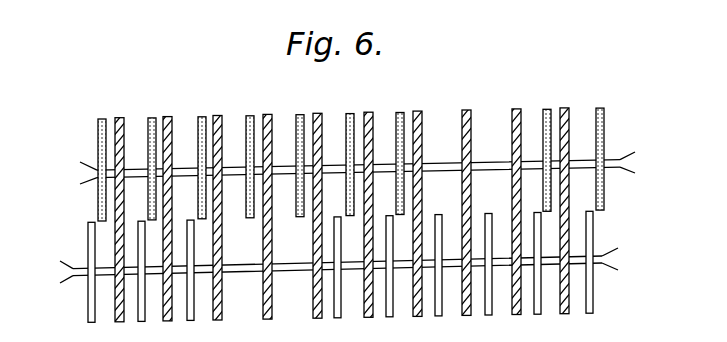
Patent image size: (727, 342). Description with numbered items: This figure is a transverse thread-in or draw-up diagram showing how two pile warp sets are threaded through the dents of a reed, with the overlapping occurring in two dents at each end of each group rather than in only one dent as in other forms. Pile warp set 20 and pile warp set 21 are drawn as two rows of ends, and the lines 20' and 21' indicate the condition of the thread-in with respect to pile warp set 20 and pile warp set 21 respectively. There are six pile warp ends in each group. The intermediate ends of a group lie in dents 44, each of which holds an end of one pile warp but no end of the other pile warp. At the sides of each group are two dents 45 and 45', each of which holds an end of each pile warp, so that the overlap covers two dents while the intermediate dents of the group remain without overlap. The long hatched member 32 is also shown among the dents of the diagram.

The pile warp set 20 is at (357, 140).
The line indicating thread-in condition of pile warp set 20 20' is at (644, 158).
The pile warp set 21 is at (345, 282).
The line indicating thread-in condition of pile warp set 21 21' is at (631, 257).
The long connecting tooth 32 is at (516, 109).
The intermediate dent 44 is at (109, 121).
The overlap dent 45 is at (340, 202).
The overlap dent 45' is at (342, 198).